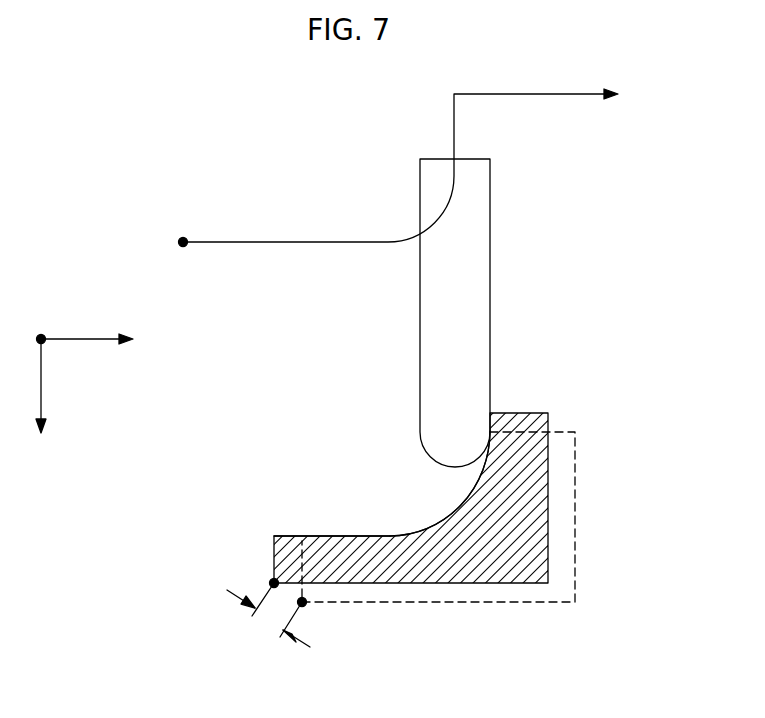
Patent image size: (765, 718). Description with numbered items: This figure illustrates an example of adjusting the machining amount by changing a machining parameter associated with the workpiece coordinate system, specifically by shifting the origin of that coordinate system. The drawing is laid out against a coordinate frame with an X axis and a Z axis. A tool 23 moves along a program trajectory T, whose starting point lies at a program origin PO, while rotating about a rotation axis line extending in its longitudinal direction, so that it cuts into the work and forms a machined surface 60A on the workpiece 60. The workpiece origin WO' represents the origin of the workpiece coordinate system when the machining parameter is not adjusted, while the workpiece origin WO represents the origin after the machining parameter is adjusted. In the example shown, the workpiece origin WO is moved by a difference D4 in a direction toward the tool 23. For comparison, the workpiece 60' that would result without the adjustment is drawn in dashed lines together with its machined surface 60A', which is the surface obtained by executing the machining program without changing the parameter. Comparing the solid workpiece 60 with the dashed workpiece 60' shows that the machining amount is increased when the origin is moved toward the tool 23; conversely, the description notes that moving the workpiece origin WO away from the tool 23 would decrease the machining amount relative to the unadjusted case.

The tool 23 is at (489, 337).
The workpiece 60 is at (418, 469).
The workpiece 60' is at (502, 510).
The machined surface 60A is at (332, 484).
The machined surface 60A' is at (422, 483).
The program trajectory T is at (282, 242).
The program origin PO is at (183, 242).
The workpiece origin WO is at (244, 544).
The workpiece origin WO' is at (356, 622).
The difference D4 is at (267, 622).
The X axis X is at (87, 325).
The Z axis Z is at (28, 384).